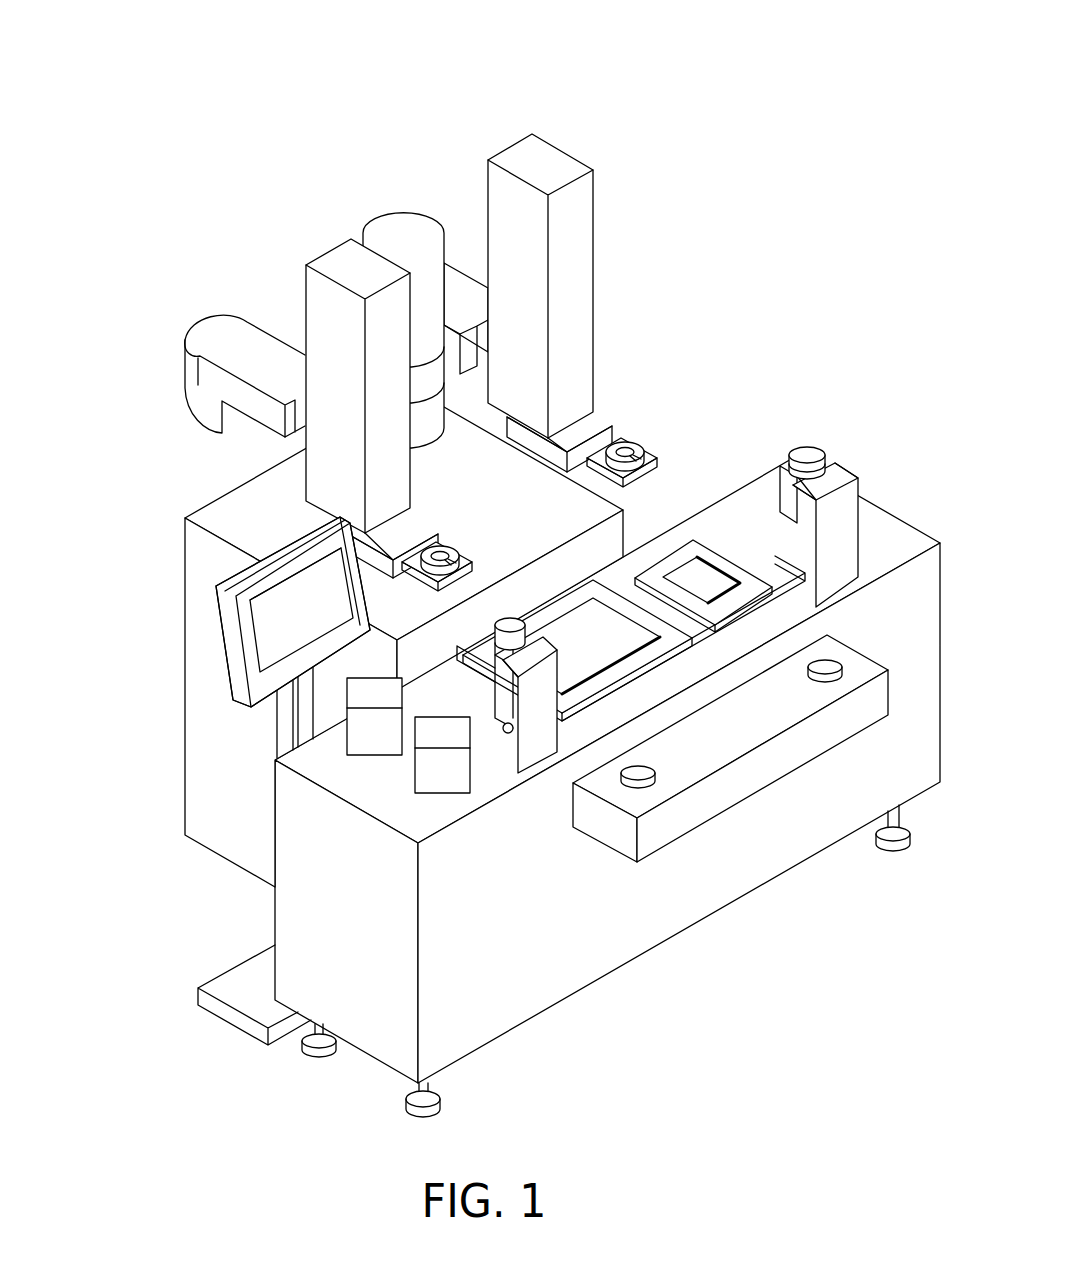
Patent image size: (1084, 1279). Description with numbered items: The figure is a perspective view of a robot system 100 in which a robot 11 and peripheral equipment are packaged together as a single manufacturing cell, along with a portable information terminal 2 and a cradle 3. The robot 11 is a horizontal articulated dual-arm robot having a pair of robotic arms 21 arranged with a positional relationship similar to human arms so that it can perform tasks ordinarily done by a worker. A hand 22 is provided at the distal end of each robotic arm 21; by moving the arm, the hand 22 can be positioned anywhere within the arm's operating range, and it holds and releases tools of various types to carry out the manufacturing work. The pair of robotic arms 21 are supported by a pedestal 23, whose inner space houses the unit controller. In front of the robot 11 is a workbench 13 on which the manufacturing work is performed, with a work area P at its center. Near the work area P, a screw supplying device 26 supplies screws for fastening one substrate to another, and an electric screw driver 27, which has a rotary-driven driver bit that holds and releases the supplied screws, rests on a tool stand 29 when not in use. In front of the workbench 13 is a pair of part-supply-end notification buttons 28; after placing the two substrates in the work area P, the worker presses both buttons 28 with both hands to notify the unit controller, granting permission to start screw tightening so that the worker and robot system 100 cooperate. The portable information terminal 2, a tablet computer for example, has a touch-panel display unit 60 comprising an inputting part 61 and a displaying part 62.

The robot system 100 is at (765, 92).
The robot 11 is at (395, 362).
The robotic arms 21 is at (585, 273).
The hand 22 is at (645, 443).
The portable information terminal 2 is at (211, 668).
The touch-panel display unit 60 is at (211, 618).
The inputting part 61 is at (301, 610).
The displaying part 62 is at (295, 574).
The pedestal 23 is at (202, 733).
The cradle 3 is at (265, 690).
The screw supplying device 26 is at (373, 752).
The electric screw driver 27 is at (503, 705).
The tool stand 29 is at (537, 750).
The part-supply-end notification buttons 28 is at (633, 775).
The workbench 13 is at (877, 525).
The work area P is at (600, 627).